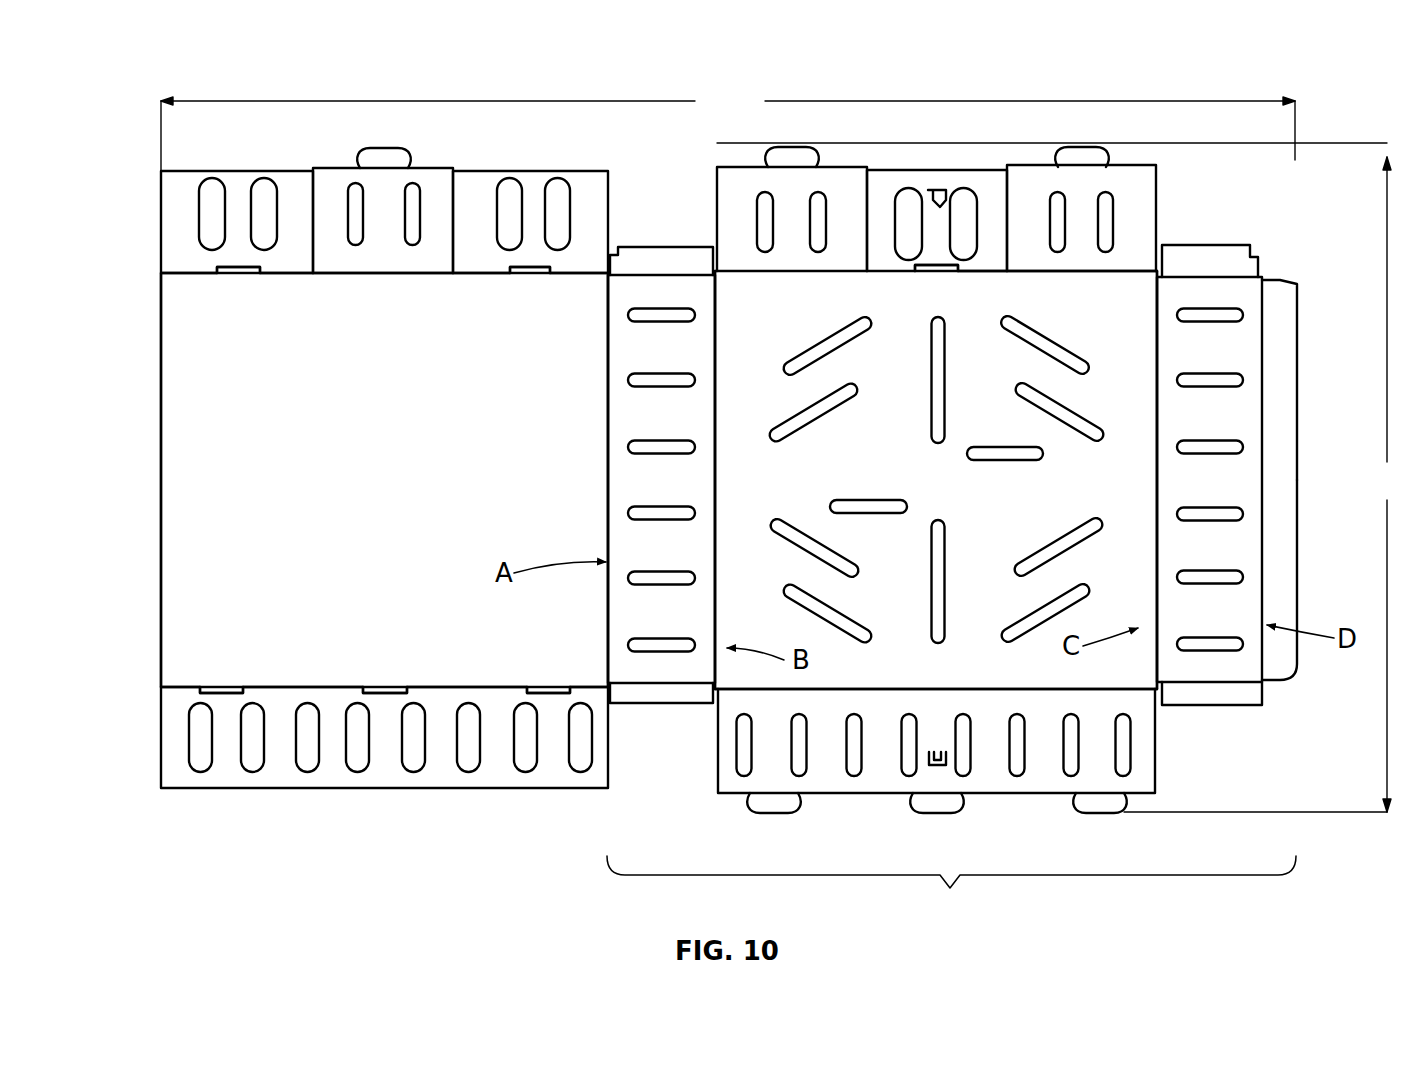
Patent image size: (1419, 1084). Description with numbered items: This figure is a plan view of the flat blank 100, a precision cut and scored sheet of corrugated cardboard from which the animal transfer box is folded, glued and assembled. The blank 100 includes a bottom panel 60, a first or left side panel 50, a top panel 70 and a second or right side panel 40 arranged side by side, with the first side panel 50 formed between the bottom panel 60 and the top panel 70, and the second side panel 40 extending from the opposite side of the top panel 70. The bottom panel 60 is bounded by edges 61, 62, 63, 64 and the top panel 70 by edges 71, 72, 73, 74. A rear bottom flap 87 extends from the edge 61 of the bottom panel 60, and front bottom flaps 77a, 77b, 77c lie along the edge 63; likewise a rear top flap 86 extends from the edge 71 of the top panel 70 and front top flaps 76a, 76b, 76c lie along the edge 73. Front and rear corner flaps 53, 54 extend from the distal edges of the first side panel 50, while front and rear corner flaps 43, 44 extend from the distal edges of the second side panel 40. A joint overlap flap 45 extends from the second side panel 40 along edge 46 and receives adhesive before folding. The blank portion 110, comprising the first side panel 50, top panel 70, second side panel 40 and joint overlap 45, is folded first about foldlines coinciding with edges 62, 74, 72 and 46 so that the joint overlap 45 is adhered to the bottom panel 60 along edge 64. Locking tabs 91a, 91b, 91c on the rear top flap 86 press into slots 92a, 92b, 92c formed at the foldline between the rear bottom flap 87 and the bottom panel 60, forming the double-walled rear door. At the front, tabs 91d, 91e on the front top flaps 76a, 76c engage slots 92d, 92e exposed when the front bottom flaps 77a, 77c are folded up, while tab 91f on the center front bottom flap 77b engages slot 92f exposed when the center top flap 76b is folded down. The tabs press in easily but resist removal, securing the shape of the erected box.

The blank 100 is at (192, 836).
The blank portion 110 is at (951, 890).
The second side panel 40 is at (1209, 479).
The front corner flap 43 is at (1240, 262).
The rear corner flap 44 is at (1222, 700).
The joint overlap panel 45 is at (1283, 570).
The edge 46 is at (1265, 354).
The first side panel 50 is at (661, 479).
The front corner flap 53 is at (668, 262).
The rear corner flap 54 is at (655, 693).
The bottom panel 60 is at (384, 480).
The edge 61 is at (450, 688).
The edge 62 is at (608, 497).
The edge 63 is at (425, 276).
The edge 64 is at (162, 496).
The top panel 70 is at (936, 480).
The edge 71 is at (985, 688).
The edge 72 is at (718, 497).
The edge 73 is at (1112, 275).
The edge 74 is at (1157, 497).
The front top flap 76a is at (735, 184).
The front top flap 76b is at (885, 197).
The front top flap 76c is at (1130, 205).
The front bottom flap 77a is at (582, 197).
The front bottom flap 77b is at (336, 193).
The front bottom flap 77c is at (172, 223).
The rear top flap 86 is at (1045, 765).
The rear bottom flap 87 is at (550, 765).
The locking tab 91a is at (772, 806).
The locking tab 91b is at (935, 806).
The locking tab 91c is at (1100, 806).
The locking tab 91d is at (1083, 160).
The locking tab 91e is at (795, 160).
The locking tab 91f is at (385, 153).
The slot 92a is at (555, 690).
The slot 92b is at (382, 690).
The slot 92c is at (220, 690).
The slot 92d is at (240, 274).
The slot 92e is at (527, 276).
The slot 92f is at (940, 276).